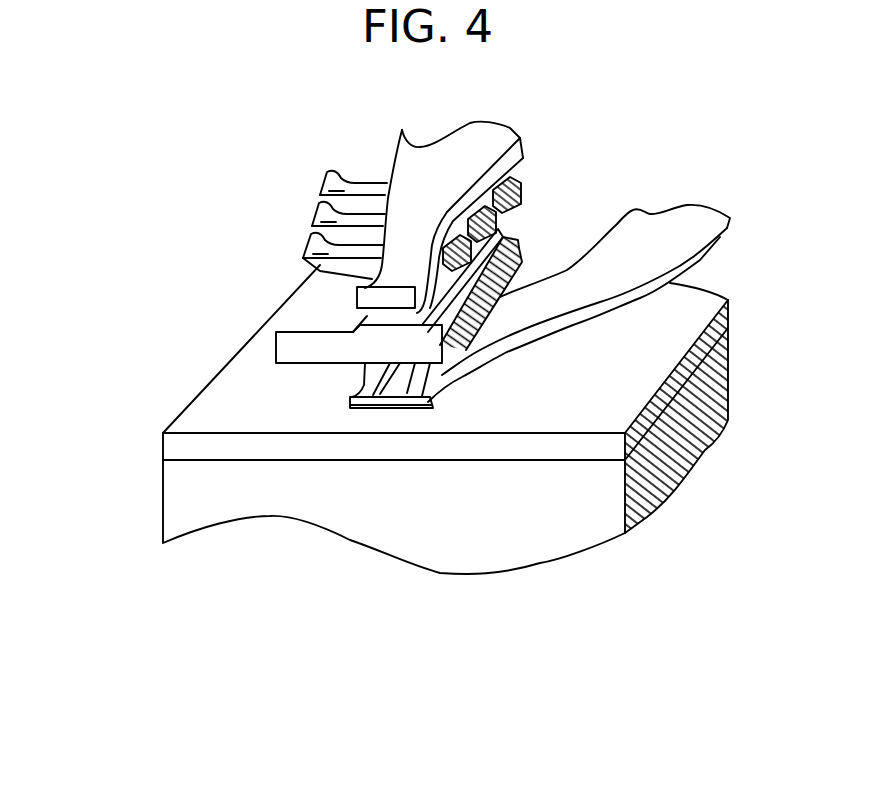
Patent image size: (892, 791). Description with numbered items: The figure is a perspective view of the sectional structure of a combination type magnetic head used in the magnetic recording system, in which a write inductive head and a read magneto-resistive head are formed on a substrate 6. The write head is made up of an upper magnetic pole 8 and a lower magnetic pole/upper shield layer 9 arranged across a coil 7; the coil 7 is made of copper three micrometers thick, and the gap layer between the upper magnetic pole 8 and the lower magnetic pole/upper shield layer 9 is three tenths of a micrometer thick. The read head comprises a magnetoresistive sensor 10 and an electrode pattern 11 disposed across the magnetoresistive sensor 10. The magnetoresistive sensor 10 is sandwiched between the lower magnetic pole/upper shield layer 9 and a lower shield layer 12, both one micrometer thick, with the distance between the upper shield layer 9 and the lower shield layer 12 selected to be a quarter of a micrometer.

The substrate 6 is at (533, 542).
The coil 7 is at (340, 195).
The upper magnetic pole 8 is at (357, 295).
The lower magnetic pole/upper shield layer 9 is at (277, 348).
The magnetoresistive sensor 10 is at (388, 404).
The electrode pattern 11 is at (364, 386).
The lower shield layer 12 is at (180, 452).